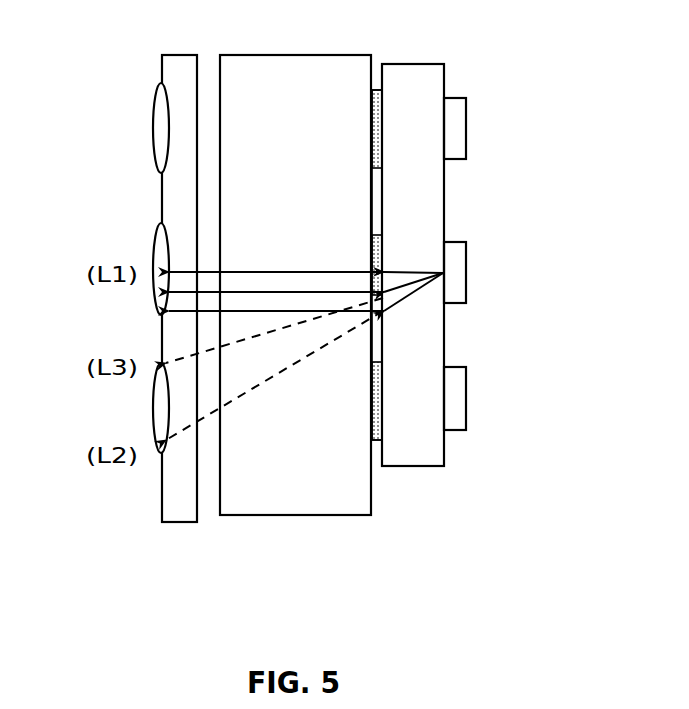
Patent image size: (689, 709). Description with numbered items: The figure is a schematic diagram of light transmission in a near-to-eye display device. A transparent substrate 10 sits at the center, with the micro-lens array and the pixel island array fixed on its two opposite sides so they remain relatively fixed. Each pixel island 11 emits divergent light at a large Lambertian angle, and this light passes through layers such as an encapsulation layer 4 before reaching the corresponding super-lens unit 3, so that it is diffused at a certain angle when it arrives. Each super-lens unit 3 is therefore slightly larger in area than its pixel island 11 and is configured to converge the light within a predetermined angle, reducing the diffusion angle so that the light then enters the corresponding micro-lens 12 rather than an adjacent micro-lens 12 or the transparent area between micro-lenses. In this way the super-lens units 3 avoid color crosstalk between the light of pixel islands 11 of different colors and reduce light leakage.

The transparent substrate 10 is at (293, 515).
The micro-lens 12 is at (155, 140).
The super-lens unit 3 is at (375, 397).
The encapsulation layer 4 is at (408, 365).
The pixel island 11 is at (466, 263).